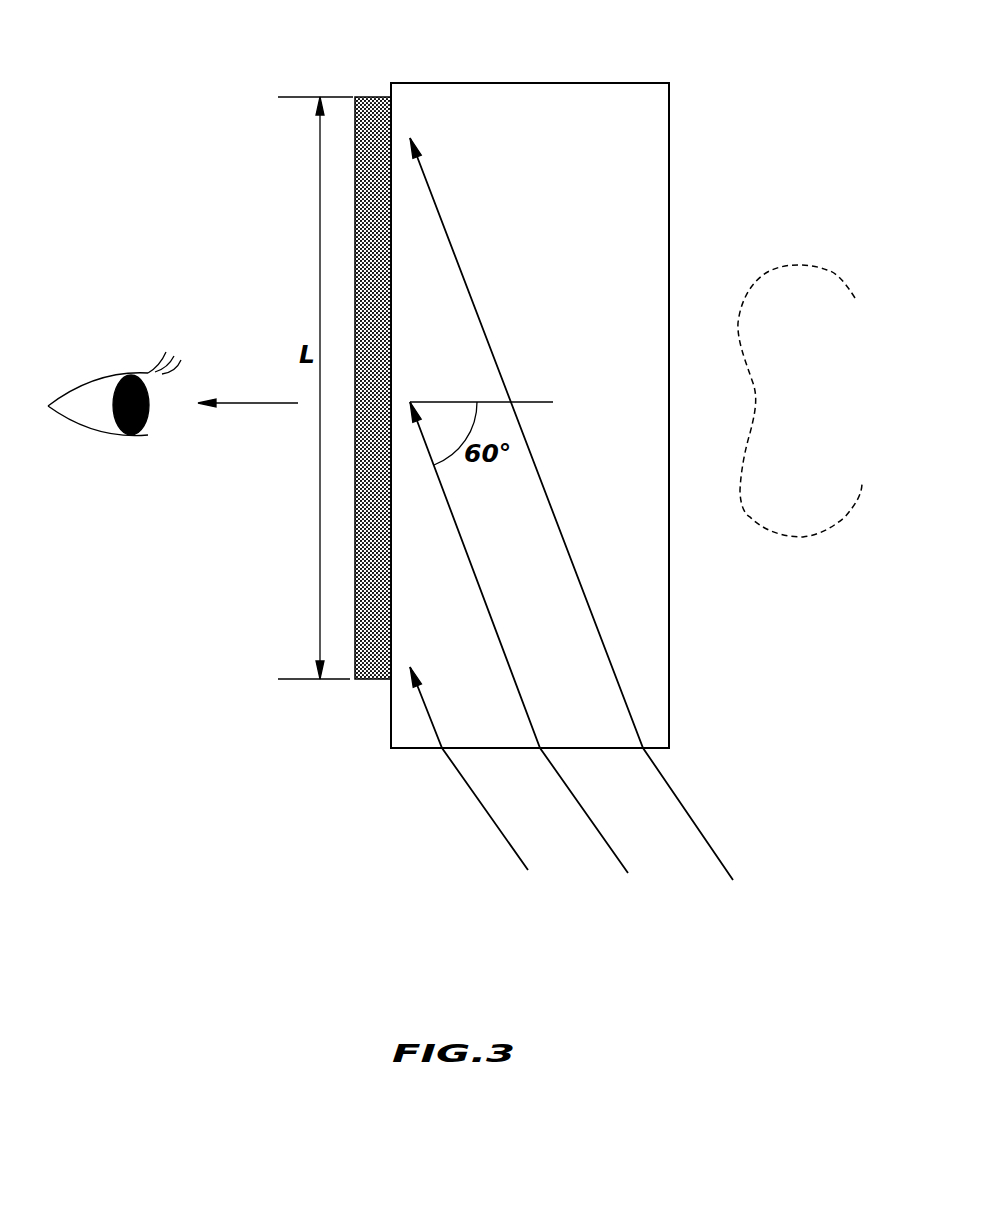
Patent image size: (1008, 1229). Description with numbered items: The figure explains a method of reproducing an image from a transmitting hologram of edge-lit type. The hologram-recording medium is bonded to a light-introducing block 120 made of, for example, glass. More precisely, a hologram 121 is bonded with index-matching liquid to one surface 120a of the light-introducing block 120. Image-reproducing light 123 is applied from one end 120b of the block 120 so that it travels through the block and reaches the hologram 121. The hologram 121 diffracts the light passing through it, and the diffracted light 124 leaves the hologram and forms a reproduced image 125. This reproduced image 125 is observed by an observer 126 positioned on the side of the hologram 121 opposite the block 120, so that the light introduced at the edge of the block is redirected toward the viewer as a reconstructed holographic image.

The light-introducing block 120 is at (545, 83).
The one surface of the light-introducing block 120a is at (390, 89).
The one end of the block 120b is at (660, 750).
The hologram 121 is at (355, 163).
The image-reproducing light 123 is at (520, 862).
The diffracted light 124 is at (265, 403).
The reproduced image 125 is at (827, 270).
The observer 126 is at (93, 374).